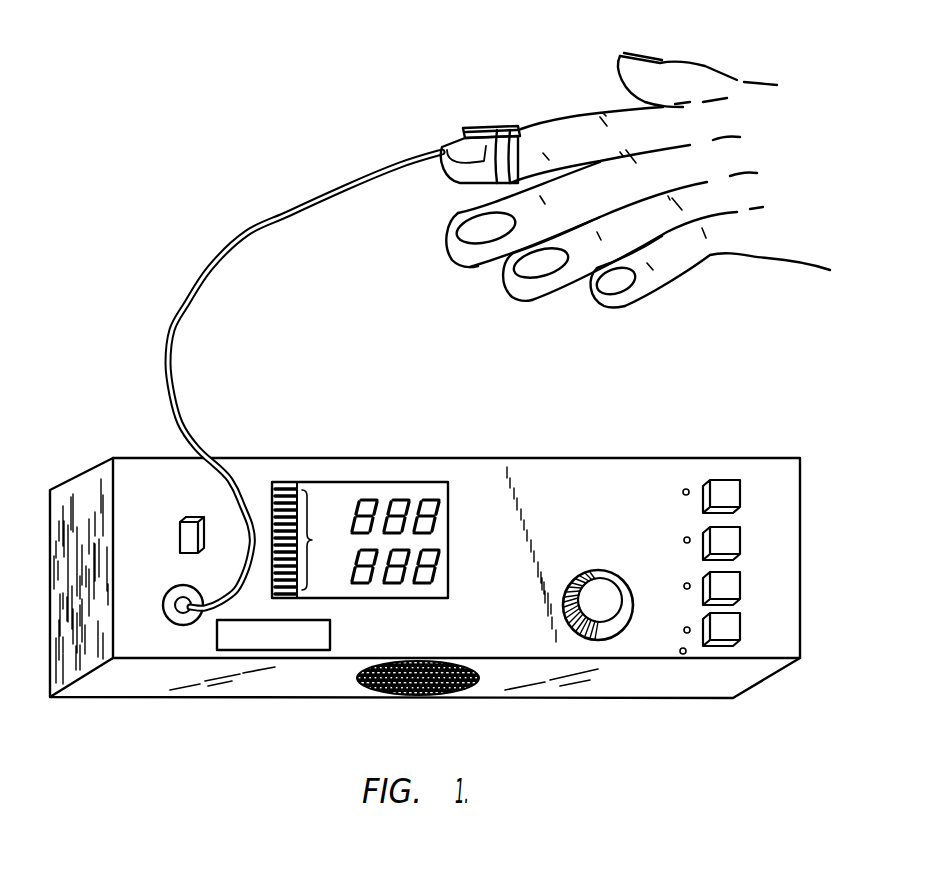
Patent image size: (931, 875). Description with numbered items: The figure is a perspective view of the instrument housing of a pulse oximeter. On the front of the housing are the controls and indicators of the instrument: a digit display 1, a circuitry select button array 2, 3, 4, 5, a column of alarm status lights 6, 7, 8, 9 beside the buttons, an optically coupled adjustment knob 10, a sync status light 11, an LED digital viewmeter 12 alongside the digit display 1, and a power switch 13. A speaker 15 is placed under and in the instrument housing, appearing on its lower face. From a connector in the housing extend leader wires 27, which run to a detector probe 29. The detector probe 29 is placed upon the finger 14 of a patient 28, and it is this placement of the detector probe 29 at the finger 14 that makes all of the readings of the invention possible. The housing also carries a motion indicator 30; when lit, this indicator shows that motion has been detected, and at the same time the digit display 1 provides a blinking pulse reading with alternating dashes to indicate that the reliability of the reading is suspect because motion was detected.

The digit display 1 is at (360, 510).
The circuitry select button 2 is at (741, 490).
The circuitry select button 3 is at (741, 538).
The circuitry select button 4 is at (741, 584).
The circuitry select button 5 is at (741, 627).
The alarm status light 6 is at (682, 492).
The alarm status light 7 is at (683, 540).
The alarm status light 8 is at (683, 586).
The alarm status light 9 is at (683, 630).
The optically coupled adjustment knob 10 is at (593, 584).
The sync status light 11 is at (683, 655).
The LED digital viewmeter 12 is at (309, 540).
The power switch 13 is at (203, 526).
The finger 14 is at (456, 160).
The speaker 15 is at (433, 698).
The leader wires 27 is at (182, 298).
The patient 28 is at (798, 203).
The detector probe 29 is at (466, 130).
The motion indicator 30 is at (331, 639).